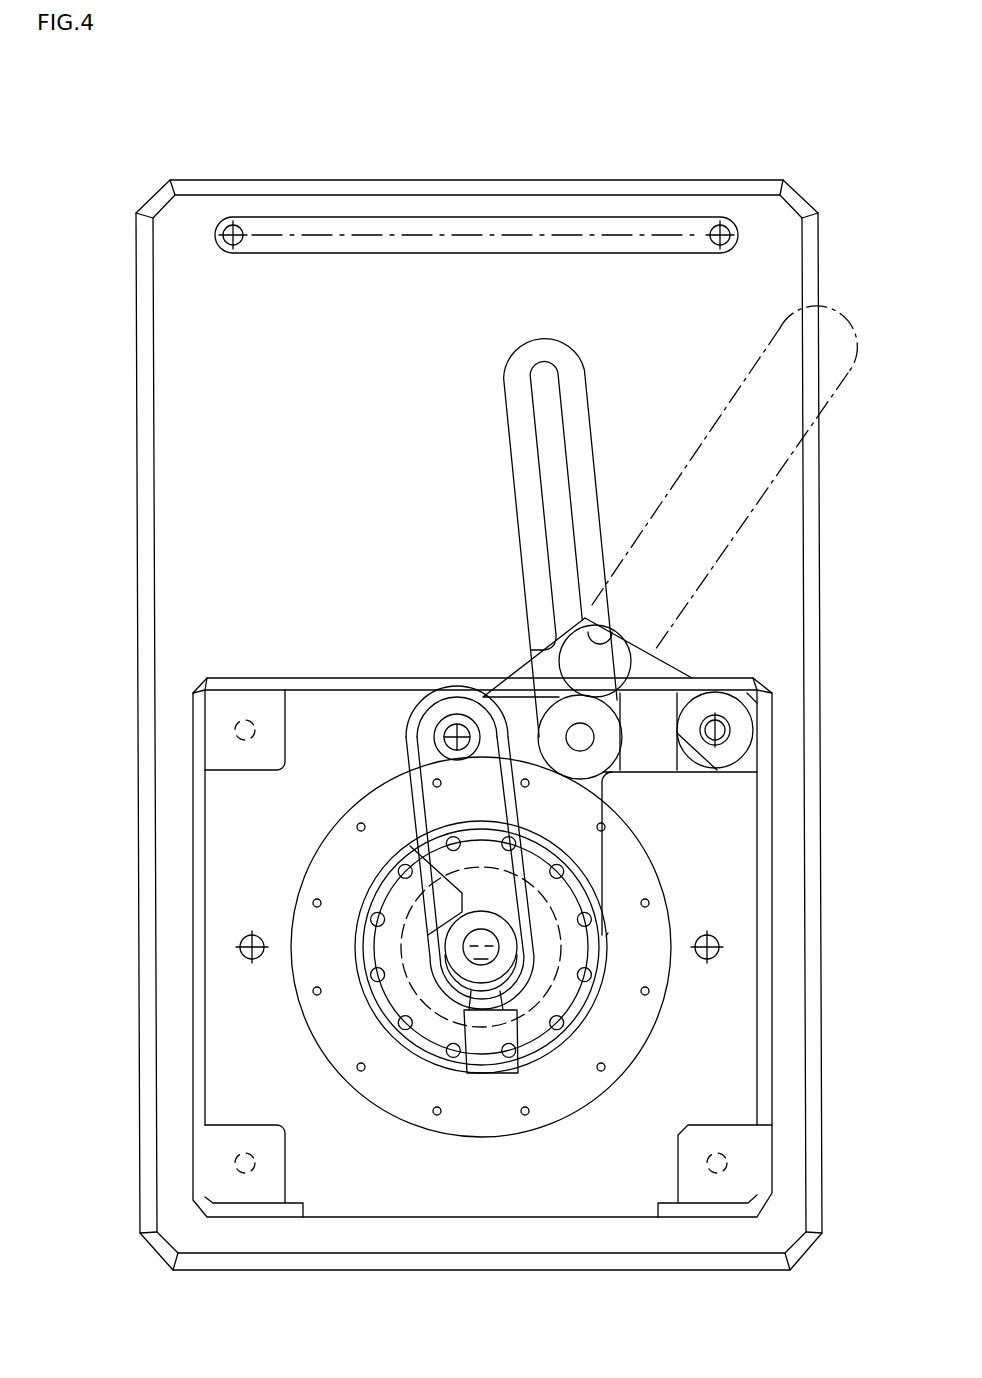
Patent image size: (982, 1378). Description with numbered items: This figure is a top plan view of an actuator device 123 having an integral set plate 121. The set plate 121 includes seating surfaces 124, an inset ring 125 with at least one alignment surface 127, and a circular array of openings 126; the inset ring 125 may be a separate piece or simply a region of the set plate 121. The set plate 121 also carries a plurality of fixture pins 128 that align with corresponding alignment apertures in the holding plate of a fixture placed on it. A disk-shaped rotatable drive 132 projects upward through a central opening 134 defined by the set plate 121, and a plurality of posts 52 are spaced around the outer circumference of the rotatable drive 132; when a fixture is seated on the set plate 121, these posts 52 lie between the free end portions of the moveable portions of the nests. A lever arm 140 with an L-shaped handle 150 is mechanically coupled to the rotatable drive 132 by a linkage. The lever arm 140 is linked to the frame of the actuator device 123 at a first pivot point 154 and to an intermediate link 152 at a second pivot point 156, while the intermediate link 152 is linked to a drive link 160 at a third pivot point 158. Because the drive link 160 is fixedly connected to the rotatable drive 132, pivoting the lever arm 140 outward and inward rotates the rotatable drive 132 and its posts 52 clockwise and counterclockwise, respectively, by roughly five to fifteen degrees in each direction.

The posts 52 is at (400, 868).
The set plate 121 is at (740, 816).
The actuator device 123 is at (136, 568).
The seating surfaces 124 is at (262, 1176).
The inset ring 125 is at (323, 1035).
The openings 126 is at (528, 1116).
The alignment surface 127 is at (388, 1097).
The fixture pins 128 is at (240, 946).
The rotatable drive 132 is at (542, 864).
The central opening 134 is at (607, 933).
The lever arm 140 is at (566, 357).
The L-shaped handle 150 is at (522, 485).
The intermediate link 152 is at (527, 718).
The first pivot point 154 is at (718, 722).
The second pivot point 156 is at (585, 733).
The third pivot point 158 is at (440, 722).
The drive link 160 is at (447, 812).